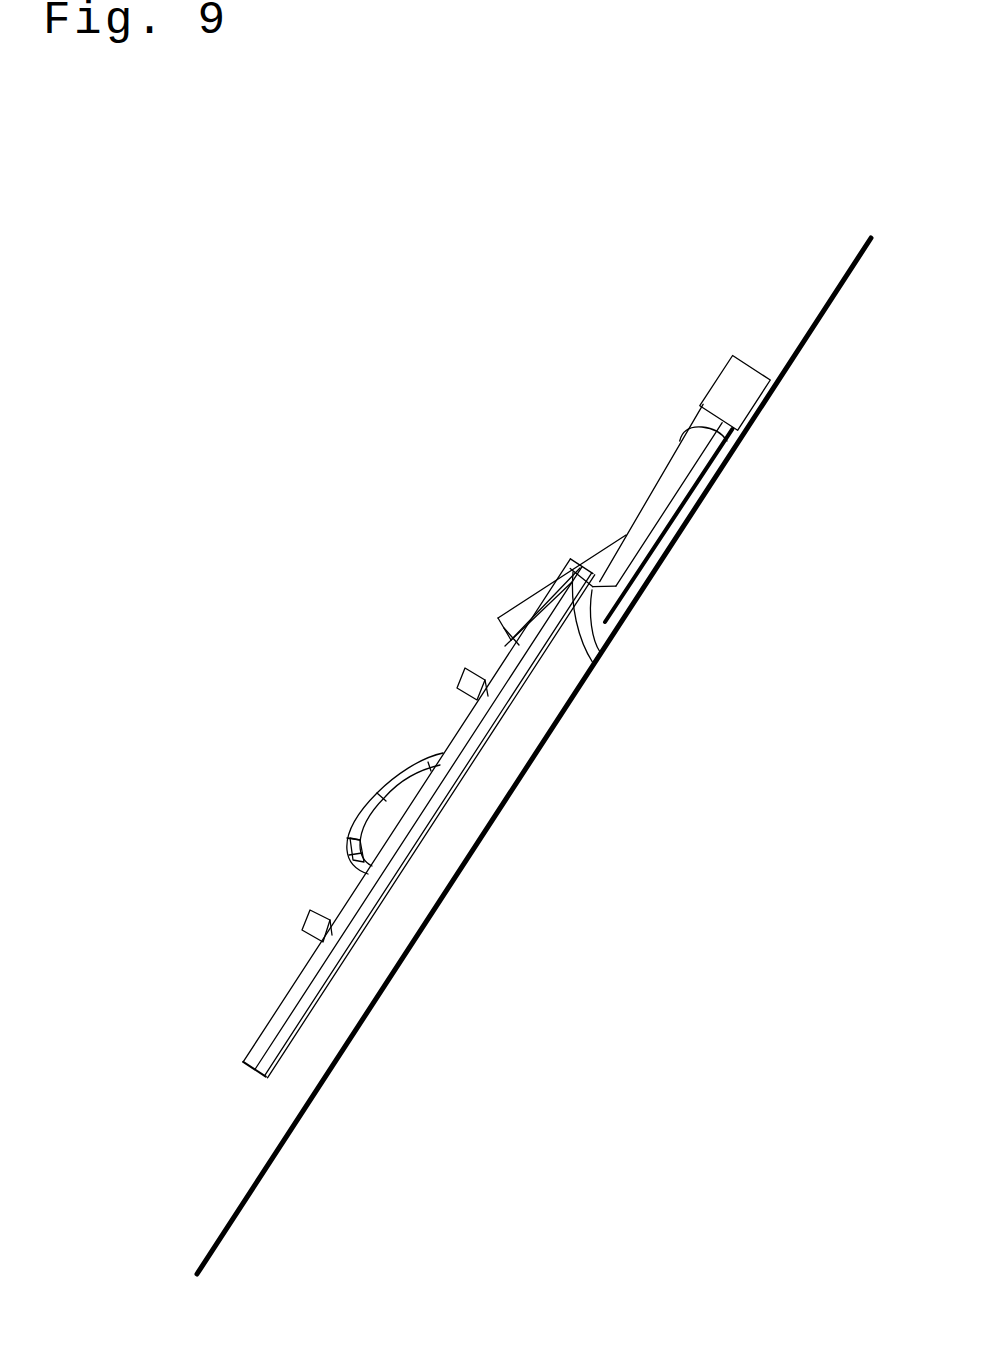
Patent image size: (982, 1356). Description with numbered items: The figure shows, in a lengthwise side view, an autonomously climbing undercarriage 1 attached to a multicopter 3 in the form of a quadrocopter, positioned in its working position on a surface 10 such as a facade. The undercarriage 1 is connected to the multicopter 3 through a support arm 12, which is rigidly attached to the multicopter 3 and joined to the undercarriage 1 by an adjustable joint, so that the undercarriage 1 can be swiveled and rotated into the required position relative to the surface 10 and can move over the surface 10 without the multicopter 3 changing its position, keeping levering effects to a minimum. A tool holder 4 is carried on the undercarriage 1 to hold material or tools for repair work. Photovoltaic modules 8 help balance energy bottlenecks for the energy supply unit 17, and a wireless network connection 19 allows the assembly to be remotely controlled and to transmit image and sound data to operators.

The autonomously climbing undercarriage 1 is at (567, 409).
The multicopter 3 is at (203, 1096).
The tool holder 4 is at (727, 393).
The photovoltaic module 8 is at (350, 823).
The surface 10 is at (855, 262).
The support arm 12 is at (547, 598).
The energy supply unit 17 is at (587, 647).
The wireless network connection 19 is at (360, 872).